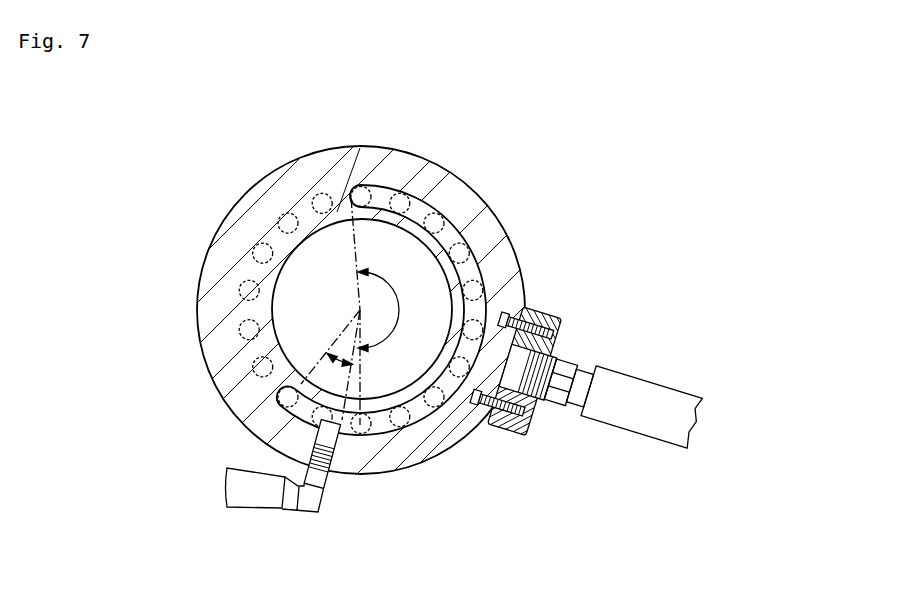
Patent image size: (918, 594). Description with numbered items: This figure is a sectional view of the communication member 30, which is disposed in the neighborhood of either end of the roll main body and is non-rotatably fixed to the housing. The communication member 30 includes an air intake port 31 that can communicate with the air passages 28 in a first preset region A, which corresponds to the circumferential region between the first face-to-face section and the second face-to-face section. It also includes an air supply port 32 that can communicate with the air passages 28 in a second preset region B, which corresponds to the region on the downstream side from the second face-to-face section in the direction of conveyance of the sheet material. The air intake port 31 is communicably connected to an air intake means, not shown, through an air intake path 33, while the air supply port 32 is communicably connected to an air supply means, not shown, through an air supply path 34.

The air passages 28 is at (313, 199).
The communication member 30 is at (553, 178).
The air intake port 31 is at (473, 251).
The air supply port 32 is at (300, 414).
The air intake path 33 is at (627, 385).
The air supply path 34 is at (252, 500).
The first preset region A is at (396, 295).
The second preset region B is at (306, 378).